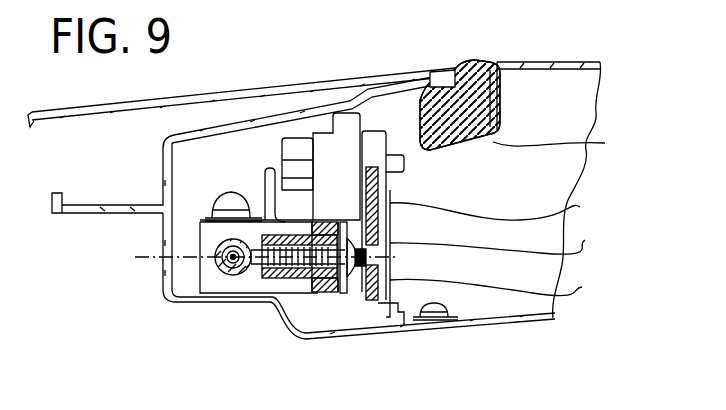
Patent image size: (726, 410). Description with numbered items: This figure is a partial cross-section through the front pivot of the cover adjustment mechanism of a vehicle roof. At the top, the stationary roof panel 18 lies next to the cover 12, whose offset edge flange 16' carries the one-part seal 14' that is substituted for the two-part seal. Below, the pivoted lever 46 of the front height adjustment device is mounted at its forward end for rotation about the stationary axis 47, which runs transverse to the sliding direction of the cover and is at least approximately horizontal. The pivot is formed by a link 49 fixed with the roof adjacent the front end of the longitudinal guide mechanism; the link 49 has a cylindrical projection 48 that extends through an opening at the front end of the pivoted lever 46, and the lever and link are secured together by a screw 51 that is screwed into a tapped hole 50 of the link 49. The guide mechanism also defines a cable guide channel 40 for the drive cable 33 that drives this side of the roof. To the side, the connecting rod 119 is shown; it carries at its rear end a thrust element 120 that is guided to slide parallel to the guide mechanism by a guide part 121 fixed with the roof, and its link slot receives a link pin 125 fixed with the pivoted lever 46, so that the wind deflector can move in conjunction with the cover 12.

The stationary roof panel 18 is at (237, 95).
The pivoted lever 46 is at (332, 157).
The one-part seal 14' is at (460, 76).
The cover 12 is at (560, 62).
The offset edge flange 16' is at (346, 207).
The connecting rod 119 is at (489, 215).
The link pin 125 is at (491, 245).
The thrust element 120 is at (500, 258).
The stationary axis 47 is at (153, 258).
The cable guide channel 40 is at (199, 289).
The drive cable 33 is at (240, 276).
The tapped hole 50 is at (265, 281).
The link 49 is at (320, 290).
The cylindrical projection 48 is at (330, 284).
The screw 51 is at (343, 295).
The guide part 121 is at (422, 322).